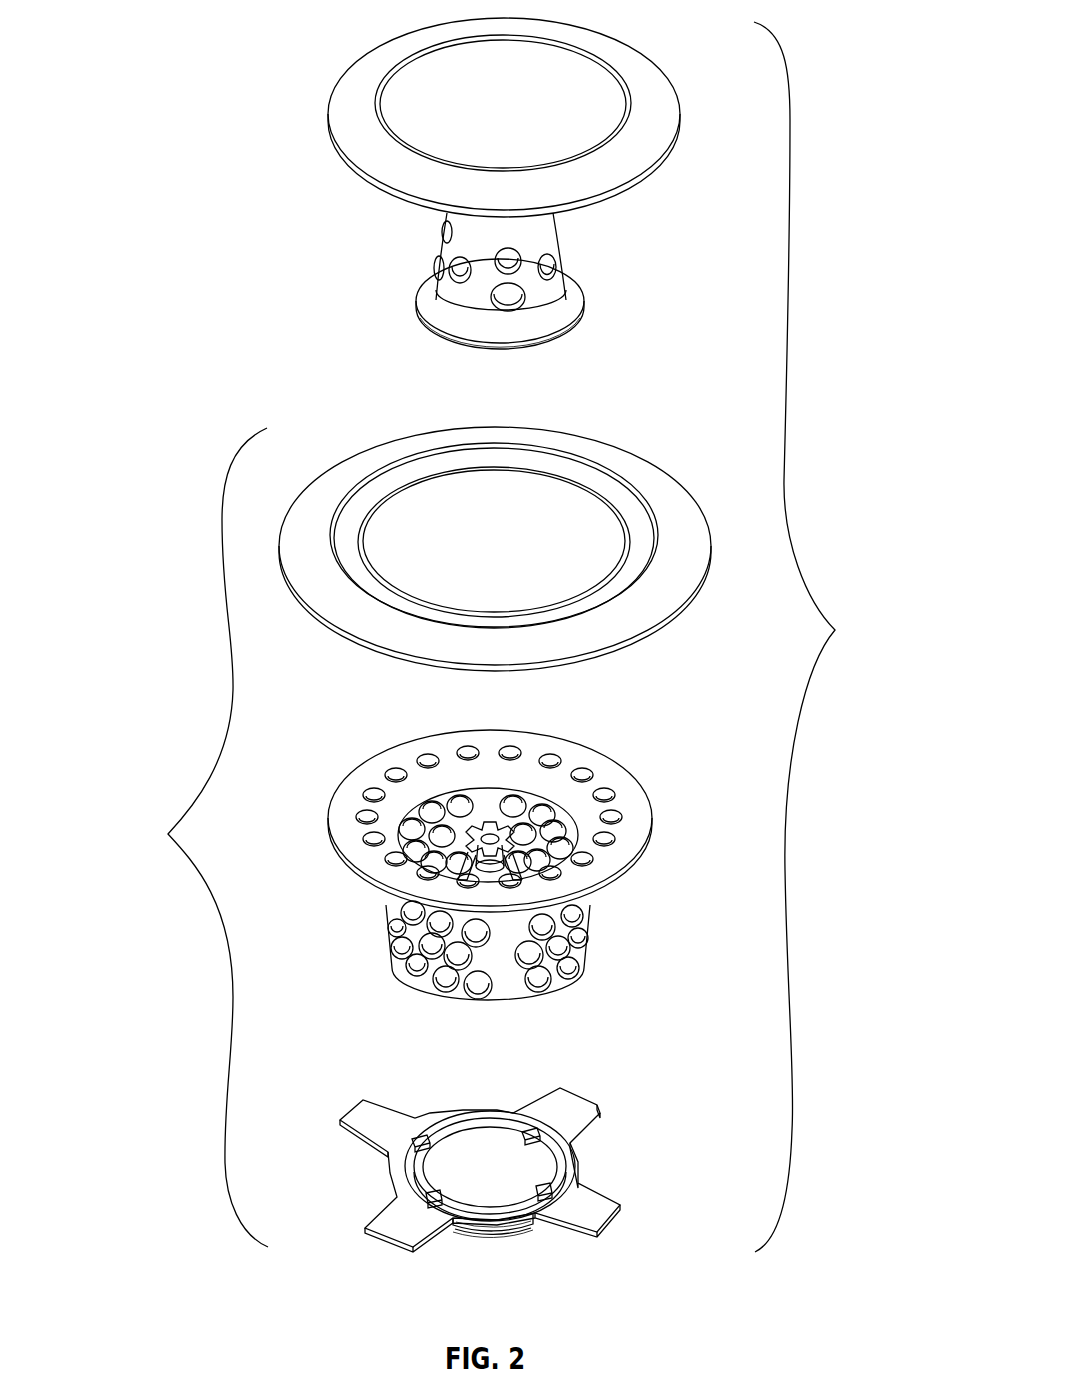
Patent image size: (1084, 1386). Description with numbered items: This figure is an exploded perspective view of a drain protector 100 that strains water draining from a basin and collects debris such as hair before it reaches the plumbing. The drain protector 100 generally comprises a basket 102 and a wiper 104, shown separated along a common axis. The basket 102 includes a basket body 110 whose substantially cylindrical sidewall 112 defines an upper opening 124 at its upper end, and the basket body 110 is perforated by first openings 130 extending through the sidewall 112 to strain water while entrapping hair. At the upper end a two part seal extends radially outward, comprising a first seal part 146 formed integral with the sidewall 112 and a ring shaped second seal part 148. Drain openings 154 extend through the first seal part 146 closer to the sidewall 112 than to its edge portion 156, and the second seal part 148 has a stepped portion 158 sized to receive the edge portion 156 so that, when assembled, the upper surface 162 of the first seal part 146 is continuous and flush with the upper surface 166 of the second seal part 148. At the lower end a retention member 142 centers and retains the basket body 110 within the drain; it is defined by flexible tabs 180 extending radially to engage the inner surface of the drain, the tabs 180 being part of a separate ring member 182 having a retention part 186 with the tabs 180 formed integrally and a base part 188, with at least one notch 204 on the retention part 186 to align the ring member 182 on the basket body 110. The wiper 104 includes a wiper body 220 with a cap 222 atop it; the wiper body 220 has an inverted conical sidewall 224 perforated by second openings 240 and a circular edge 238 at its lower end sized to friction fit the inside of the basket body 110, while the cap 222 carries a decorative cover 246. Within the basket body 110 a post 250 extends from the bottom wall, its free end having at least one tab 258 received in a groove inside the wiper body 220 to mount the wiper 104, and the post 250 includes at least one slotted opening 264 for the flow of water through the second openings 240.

The drain protector 100 is at (819, 637).
The basket 102 is at (195, 837).
The wiper 104 is at (326, 243).
The basket body 110 is at (495, 978).
The sidewall 112 is at (590, 938).
The upper opening 124 is at (555, 813).
The first openings 130 is at (407, 960).
The retention member 142 is at (427, 1218).
The first seal part 146 is at (627, 797).
The second seal part 148 is at (509, 549).
The drain openings 154 is at (607, 843).
The edge portion 156 is at (355, 853).
The stepped portion 158 is at (358, 573).
The upper surface 162 is at (343, 795).
The upper surface 166 is at (407, 628).
The flexible tabs 180 is at (362, 1118).
The ring member 182 is at (510, 1228).
The retention part 186 is at (526, 1139).
The base part 188 is at (472, 1228).
The notch 204 is at (423, 1137).
The wiper body 220 is at (463, 297).
The cap 222 is at (630, 70).
The sidewall 224 is at (465, 237).
The circular edge 238 is at (573, 302).
The second openings 240 is at (557, 263).
The decorative cover 246 is at (542, 62).
The post 250 is at (493, 823).
The tab 258 is at (493, 837).
The slotted opening 264 is at (474, 857).